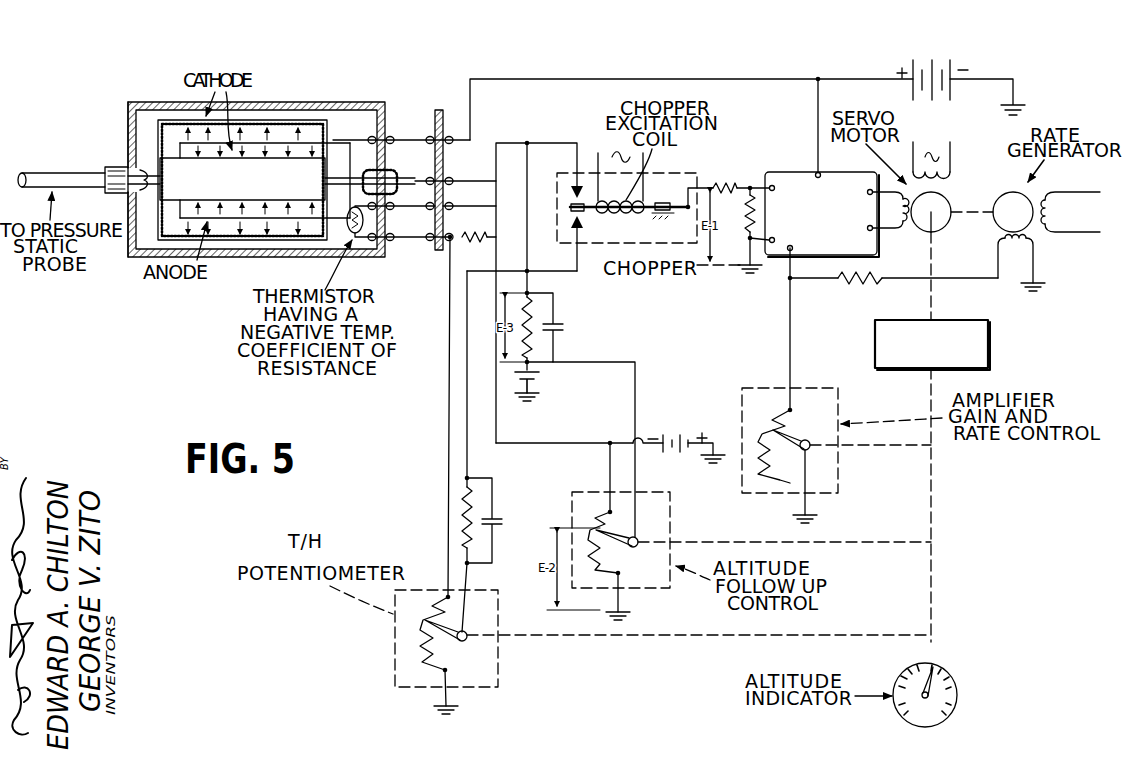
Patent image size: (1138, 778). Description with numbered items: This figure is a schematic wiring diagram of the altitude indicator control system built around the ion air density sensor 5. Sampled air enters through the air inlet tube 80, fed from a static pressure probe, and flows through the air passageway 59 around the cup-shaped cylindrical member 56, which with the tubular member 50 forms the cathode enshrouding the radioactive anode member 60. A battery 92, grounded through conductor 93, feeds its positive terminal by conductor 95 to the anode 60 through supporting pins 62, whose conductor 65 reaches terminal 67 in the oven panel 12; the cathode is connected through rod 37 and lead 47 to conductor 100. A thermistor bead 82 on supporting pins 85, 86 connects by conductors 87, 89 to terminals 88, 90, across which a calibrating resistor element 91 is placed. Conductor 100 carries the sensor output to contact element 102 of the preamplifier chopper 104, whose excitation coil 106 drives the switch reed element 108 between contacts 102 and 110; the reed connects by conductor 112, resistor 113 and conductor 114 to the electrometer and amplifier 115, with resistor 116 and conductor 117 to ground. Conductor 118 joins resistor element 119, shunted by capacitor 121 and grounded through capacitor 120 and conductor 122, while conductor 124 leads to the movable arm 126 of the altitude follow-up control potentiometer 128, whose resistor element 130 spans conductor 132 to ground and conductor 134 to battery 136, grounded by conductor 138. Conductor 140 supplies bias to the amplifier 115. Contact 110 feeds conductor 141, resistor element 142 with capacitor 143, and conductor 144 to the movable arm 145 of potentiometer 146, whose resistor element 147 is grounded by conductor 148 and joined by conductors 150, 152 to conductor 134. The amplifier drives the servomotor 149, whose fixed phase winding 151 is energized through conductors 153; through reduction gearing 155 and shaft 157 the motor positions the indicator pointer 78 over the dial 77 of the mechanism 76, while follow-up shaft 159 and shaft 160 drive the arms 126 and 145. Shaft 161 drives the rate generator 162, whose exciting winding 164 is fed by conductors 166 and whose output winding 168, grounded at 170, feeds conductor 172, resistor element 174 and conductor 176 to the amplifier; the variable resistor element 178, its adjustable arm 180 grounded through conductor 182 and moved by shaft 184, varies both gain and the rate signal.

The ion air density sensor 5 is at (272, 101).
The panel of the oven 12 is at (440, 109).
The rod 37 is at (392, 178).
The anode lead 47 is at (450, 178).
The tubular member 50 is at (258, 198).
The cup-shaped cylindrical member 56 is at (284, 118).
The air passageway 59 is at (322, 108).
The radioactive cylindrical member 60 is at (182, 128).
The supporting pins 62 is at (396, 137).
The electrical conductor 65 is at (416, 138).
The electrical terminal 67 is at (469, 138).
The mechanism 76 is at (942, 562).
The dial 77 is at (958, 701).
The indicator pointer 78 is at (936, 683).
The air inlet conduit or tube 80 is at (58, 172).
The thermistor bead 82 is at (350, 226).
The supporting pin 85 is at (392, 241).
The supporting pin 86 is at (396, 238).
The electrical conductor 87 is at (416, 241).
The electrical terminal 88 is at (440, 246).
The electrical conductor 89 is at (408, 218).
The electrical terminal 90 is at (452, 206).
The resistor element 91 is at (473, 234).
The battery 92 is at (941, 57).
The conductor 93 is at (985, 79).
The conductor 95 is at (577, 77).
The conductor 100 is at (511, 142).
The contact element 102 is at (572, 193).
The preamplifier chopper 104 is at (633, 246).
The excitation coil 106 is at (629, 196).
The switch reed element 108 is at (663, 197).
The contact element 110 is at (576, 222).
The electrical conductor 112 is at (710, 182).
The resistor 113 is at (747, 182).
The conductor 114 is at (758, 185).
The electrometer and amplifier 115 is at (826, 249).
The second resistor 116 is at (744, 224).
The conductor 117 is at (756, 265).
The conductor 118 is at (527, 180).
The resistor element 119 is at (553, 314).
The capacitor 120 is at (540, 376).
The capacitor 121 is at (562, 332).
The conductor 122 is at (535, 391).
The conductor 124 is at (638, 384).
The movable arm 126 is at (618, 550).
The altitude follow-up control potentiometer 128 is at (660, 589).
The variable resistor element 130 is at (604, 510).
The conductor 132 is at (625, 610).
The conductor 134 is at (620, 441).
The battery 136 is at (683, 464).
The conductor 138 is at (712, 448).
The conductor 140 is at (818, 109).
The electrical conductor 141 is at (548, 273).
The resistor element 142 is at (462, 508).
The capacitor 143 is at (500, 520).
The conductor 144 is at (466, 576).
The movable arm 145 is at (459, 641).
The potentiometer 146 is at (345, 657).
The variable resistor element 147 is at (905, 229).
The conductor 148 is at (442, 705).
The servomotor 149 is at (963, 186).
The conductor 150 is at (448, 412).
The fixed phase winding 151 is at (930, 175).
The conductor 152 is at (497, 421).
The conductors 153 is at (931, 150).
The reduction gearing 155 is at (988, 349).
The shaft 157 is at (931, 490).
The follow-up shaft 159 is at (834, 546).
The shaft 160 is at (691, 640).
The shaft 161 is at (978, 213).
The rate generator 162 is at (1038, 234).
The exciting winding 164 is at (1054, 208).
The conductors 166 is at (1080, 193).
The output winding 168 is at (1015, 259).
The ground connection 170 is at (1038, 281).
The conductor 172 is at (953, 280).
The resistor element 174 is at (866, 285).
The conductor 176 is at (812, 282).
The variable resistor element 178 is at (768, 426).
The adjustable resistor arm 180 is at (785, 437).
The conductor 182 is at (820, 510).
The shaft 184 is at (862, 450).